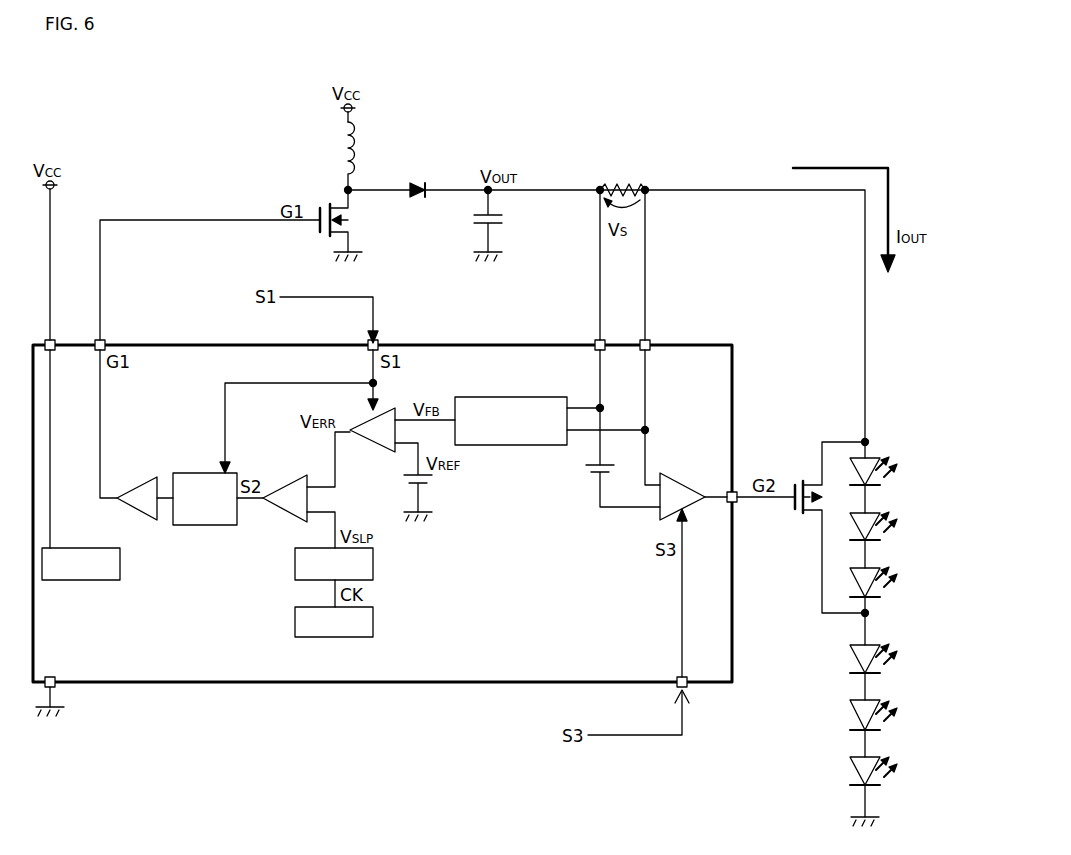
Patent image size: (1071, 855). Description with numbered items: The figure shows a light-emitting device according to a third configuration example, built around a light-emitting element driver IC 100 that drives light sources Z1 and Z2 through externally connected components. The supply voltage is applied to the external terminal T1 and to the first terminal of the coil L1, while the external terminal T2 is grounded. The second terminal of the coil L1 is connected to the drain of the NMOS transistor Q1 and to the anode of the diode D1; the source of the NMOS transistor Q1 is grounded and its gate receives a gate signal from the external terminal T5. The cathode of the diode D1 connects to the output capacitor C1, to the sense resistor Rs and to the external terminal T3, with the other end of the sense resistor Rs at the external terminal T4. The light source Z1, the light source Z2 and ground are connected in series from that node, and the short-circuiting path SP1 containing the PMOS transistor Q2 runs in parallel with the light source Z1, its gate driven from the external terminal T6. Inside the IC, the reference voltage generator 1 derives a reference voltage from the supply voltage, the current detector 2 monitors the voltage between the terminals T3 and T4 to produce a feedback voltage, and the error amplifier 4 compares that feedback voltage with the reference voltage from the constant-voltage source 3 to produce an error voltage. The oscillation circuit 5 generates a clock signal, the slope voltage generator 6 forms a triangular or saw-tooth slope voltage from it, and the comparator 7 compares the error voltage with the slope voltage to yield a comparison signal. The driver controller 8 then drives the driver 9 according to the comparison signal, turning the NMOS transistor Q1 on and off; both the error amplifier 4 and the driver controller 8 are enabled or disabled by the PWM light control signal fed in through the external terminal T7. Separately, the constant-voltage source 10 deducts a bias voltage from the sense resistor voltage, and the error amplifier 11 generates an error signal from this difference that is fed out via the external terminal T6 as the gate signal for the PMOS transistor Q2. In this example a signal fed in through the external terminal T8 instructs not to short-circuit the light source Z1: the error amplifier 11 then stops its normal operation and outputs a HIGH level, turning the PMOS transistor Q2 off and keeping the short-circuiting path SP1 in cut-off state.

The light-emitting element driver IC 100 is at (380, 682).
The reference voltage generator 1 is at (62, 550).
The current detector 2 is at (508, 396).
The constant-voltage source 3 is at (436, 484).
The error amplifier 4 is at (370, 454).
The oscillation circuit 5 is at (374, 622).
The slope voltage generator 6 is at (374, 566).
The comparator 7 is at (285, 477).
The driver controller 8 is at (204, 475).
The driver 9 is at (134, 483).
The constant-voltage source 10 is at (576, 472).
The error amplifier 11 is at (681, 481).
The external terminal T1 is at (53, 345).
The external terminal T2 is at (56, 686).
The external terminal T3 is at (594, 345).
The external terminal T4 is at (648, 345).
The external terminal T5 is at (103, 345).
The external terminal T6 is at (737, 490).
The external terminal T7 is at (376, 345).
The external terminal T8 is at (688, 687).
The NMOS transistor Q1 is at (324, 206).
The PMOS transistor Q2 is at (798, 483).
The coil L1 is at (340, 154).
The diode D1 is at (416, 180).
The output capacitor C1 is at (506, 219).
The sense resistor Rs is at (620, 182).
The short-circuiting path SP1 is at (813, 442).
The light source Z1 is at (903, 447).
The light source Z2 is at (903, 645).